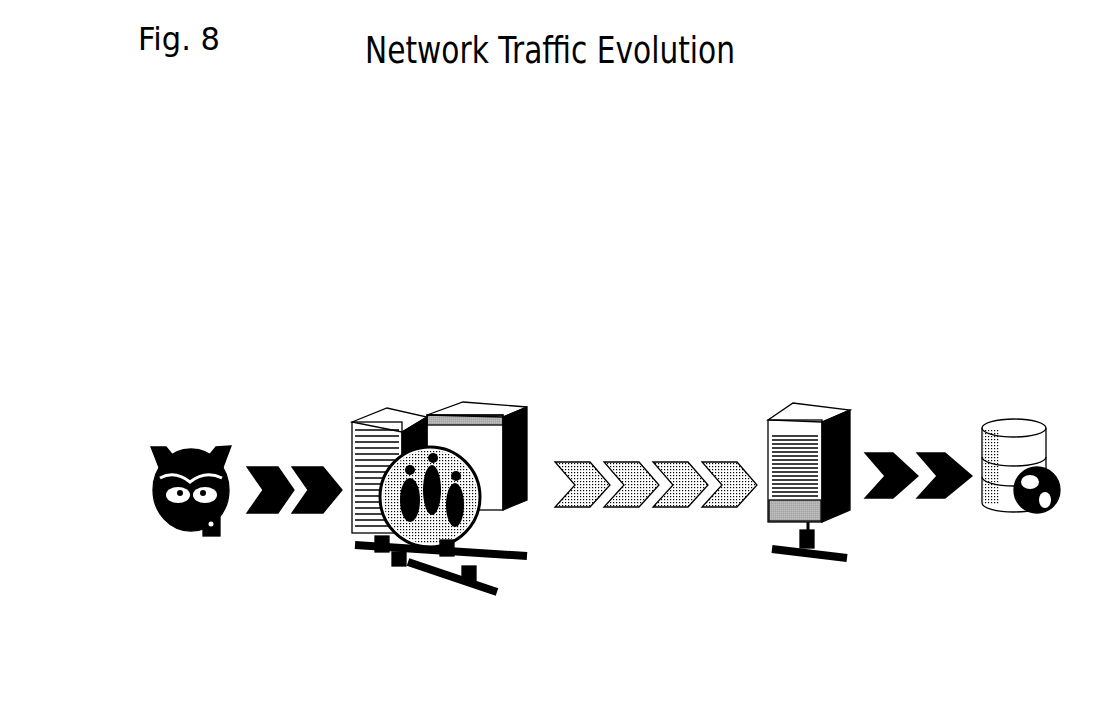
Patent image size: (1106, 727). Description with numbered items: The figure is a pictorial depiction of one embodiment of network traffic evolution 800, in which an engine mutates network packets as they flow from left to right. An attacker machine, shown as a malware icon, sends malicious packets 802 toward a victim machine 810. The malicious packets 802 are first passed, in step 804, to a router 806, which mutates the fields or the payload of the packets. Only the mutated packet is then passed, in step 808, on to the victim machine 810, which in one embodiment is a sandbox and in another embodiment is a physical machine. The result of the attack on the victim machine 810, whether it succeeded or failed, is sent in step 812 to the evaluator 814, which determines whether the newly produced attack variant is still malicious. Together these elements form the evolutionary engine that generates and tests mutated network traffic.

The network traffic evolution 800 is at (830, 316).
The malicious packets 802 is at (163, 522).
The passing step 804 is at (290, 460).
The router 806 is at (373, 565).
The passing step 808 is at (602, 463).
The victim machine 810 is at (770, 530).
The sending step 812 is at (913, 455).
The evaluator 814 is at (972, 517).